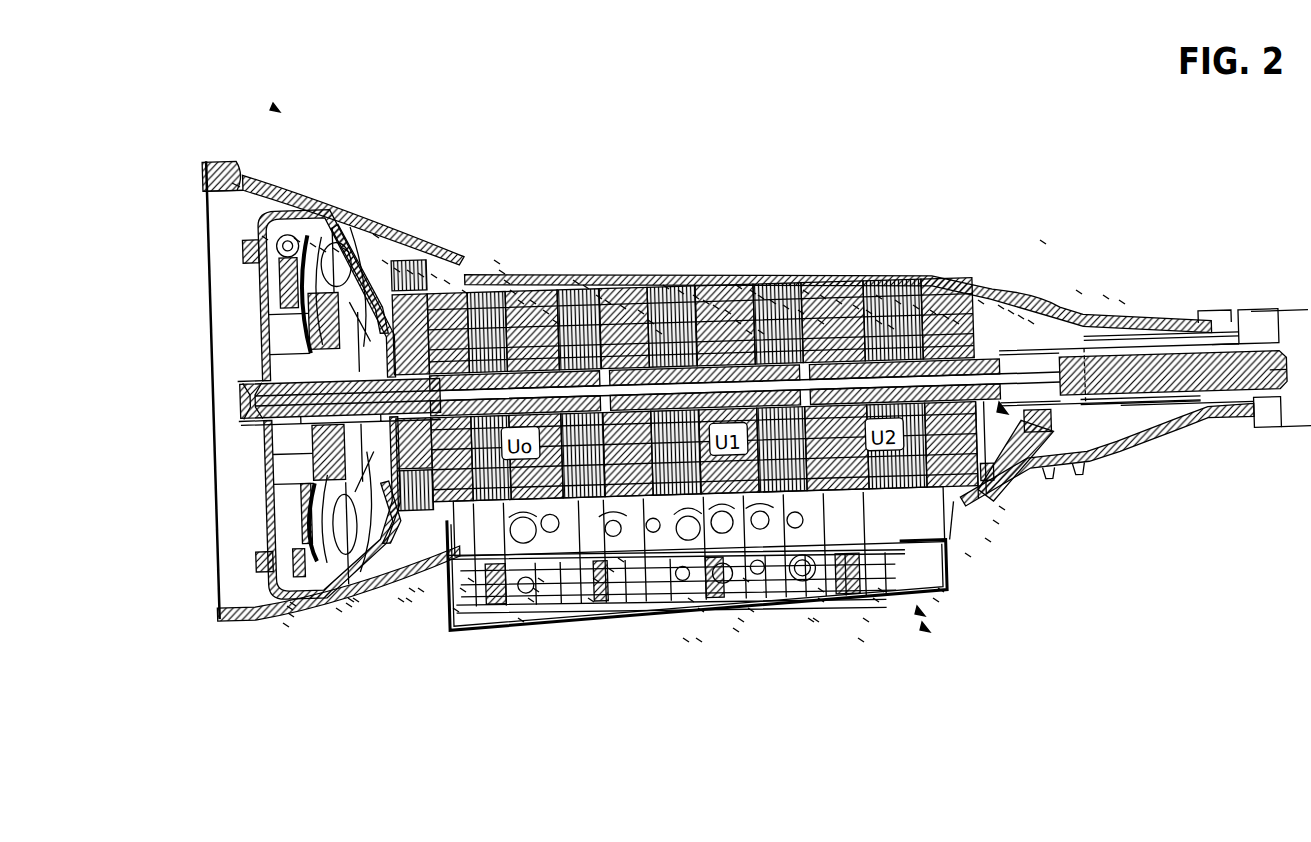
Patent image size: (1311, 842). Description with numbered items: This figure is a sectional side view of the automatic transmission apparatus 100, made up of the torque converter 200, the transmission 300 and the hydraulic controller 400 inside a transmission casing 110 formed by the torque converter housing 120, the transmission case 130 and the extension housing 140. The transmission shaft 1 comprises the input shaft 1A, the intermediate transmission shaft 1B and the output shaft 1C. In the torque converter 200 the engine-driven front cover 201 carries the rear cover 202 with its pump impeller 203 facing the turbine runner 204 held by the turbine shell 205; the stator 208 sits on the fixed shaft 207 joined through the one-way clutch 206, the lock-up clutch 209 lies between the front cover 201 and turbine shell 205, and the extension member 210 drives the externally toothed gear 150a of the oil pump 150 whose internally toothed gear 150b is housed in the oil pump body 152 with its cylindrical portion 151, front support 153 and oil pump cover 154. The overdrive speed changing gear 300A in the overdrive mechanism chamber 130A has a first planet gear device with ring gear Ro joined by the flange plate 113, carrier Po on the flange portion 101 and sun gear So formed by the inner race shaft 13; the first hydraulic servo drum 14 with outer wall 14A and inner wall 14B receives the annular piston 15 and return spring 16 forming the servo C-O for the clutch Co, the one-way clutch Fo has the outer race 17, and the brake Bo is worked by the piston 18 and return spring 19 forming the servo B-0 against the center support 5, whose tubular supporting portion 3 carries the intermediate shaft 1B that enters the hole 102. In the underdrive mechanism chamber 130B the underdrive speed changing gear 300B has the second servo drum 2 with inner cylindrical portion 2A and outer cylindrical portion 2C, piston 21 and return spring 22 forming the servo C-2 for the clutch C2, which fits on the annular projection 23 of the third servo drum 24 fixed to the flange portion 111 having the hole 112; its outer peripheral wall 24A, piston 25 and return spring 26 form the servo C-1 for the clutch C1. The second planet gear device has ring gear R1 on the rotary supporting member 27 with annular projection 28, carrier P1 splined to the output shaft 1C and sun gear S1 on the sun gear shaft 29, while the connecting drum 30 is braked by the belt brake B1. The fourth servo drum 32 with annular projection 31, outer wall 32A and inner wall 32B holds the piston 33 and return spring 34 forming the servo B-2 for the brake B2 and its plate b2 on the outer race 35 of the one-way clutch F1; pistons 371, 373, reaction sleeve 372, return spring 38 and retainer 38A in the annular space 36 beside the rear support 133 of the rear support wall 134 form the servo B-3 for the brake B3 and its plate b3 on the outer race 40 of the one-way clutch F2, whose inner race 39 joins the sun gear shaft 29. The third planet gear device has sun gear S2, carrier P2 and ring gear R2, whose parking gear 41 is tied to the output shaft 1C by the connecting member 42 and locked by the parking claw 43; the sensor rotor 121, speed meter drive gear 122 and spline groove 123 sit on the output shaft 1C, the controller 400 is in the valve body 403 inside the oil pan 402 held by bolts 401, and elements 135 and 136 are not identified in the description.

The transmission shaft 1 is at (1004, 412).
The input shaft 1A is at (410, 272).
The intermediate transmission shaft 1B is at (621, 560).
The output shaft 1C is at (1031, 322).
The second hydraulic servo drum 2 is at (608, 302).
The inner cylindrical portion 2A is at (641, 312).
The outer cylindrical portion 2C is at (623, 307).
The tubular supporting portion 3 is at (659, 332).
The center support 5 is at (586, 287).
The inner race shaft 13 is at (412, 590).
The first hydraulic servo drum 14 is at (434, 276).
The outer peripheral wall 14A is at (497, 262).
The inner peripheral wall 14B is at (502, 272).
The annular piston 15 is at (465, 292).
The return spring 16 is at (421, 590).
The outer race 17 is at (471, 580).
The piston 18 is at (556, 322).
The return spring 19 is at (536, 590).
The annular piston 21 is at (651, 322).
The return spring 22 is at (611, 570).
The annular projection 23 is at (706, 302).
The third hydraulic servo drum 24 is at (716, 307).
The outer peripheral wall 24A is at (749, 332).
The annular piston 25 is at (728, 312).
The return spring 26 is at (736, 630).
The rotary supporting member 27 is at (741, 620).
The annular projection 28 is at (691, 600).
The sun gear shaft 29 is at (811, 620).
The connecting drum 30 is at (739, 287).
The annular projection 31 is at (821, 600).
The fourth hydraulic servo drum 32 is at (866, 620).
The outer peripheral wall 32A is at (821, 590).
The inner peripheral wall 32B is at (816, 620).
The annular piston 33 is at (839, 302).
The return spring 34 is at (823, 297).
The outer race 35 is at (786, 307).
The annular space 36 is at (1001, 307).
The return spring 38 is at (988, 540).
The return spring retainer 38A is at (956, 322).
The inner race 39 is at (876, 600).
The outer race 40 is at (881, 590).
The parking gear 41 is at (921, 612).
The connecting member 42 is at (946, 317).
The parking claw 43 is at (936, 600).
The automatic transmission apparatus 100 is at (278, 108).
The flange portion 101 is at (531, 600).
The hole 102 is at (409, 600).
The transmission casing 110 is at (401, 600).
The flange portion 111 is at (699, 640).
The hole 112 is at (738, 322).
The flange plate 113 is at (541, 580).
The torque converter housing 120 is at (290, 608).
The sensor rotor 121 is at (1043, 242).
The speed meter drive gear 122 is at (1106, 297).
The spline groove 123 is at (1122, 302).
The transmission case 130 is at (666, 287).
The overdrive mechanism chamber 130A is at (521, 620).
The underdrive mechanism chamber 130B is at (746, 580).
The rear support 133 is at (996, 522).
The rear support wall 134 is at (1002, 508).
The valve body gasket 135 is at (591, 600).
The clutch cylinder 136 is at (856, 307).
The extension housing 140 is at (1079, 292).
The gear oil pump 150 is at (346, 250).
The externally toothed gear 150a is at (376, 236).
The internally toothed gear 150b is at (385, 262).
The cylindrical portion 151 is at (323, 250).
The oil pump body 152 is at (336, 250).
The front support 153 is at (421, 275).
The oil pump cover 154 is at (397, 270).
The torque converter 200 is at (286, 625).
The front cover 201 is at (291, 615).
The rear cover 202 is at (349, 605).
The pump impeller 203 is at (313, 245).
The turbine runner 204 is at (297, 240).
The turbine shell 205 is at (293, 604).
The one-way clutch 206 is at (265, 238).
The fixed shaft 207 is at (351, 600).
The stator 208 is at (339, 610).
The lock-up clutch 209 is at (237, 186).
The extension member 210 is at (356, 600).
The transmission 300 is at (926, 628).
The overdrive speed changing gear 300A is at (456, 610).
The underdrive speed changing gear 300B is at (596, 580).
The piston 371 is at (933, 312).
The reaction sleeve 372 is at (981, 302).
The piston 373 is at (1011, 312).
The hydraulic controller 400 is at (686, 640).
The bolts 401 is at (968, 555).
The oil pan 402 is at (941, 590).
The valve body 403 is at (751, 610).
The hydraulic servo B-0 is at (576, 282).
The hydraulic servo B-2 is at (861, 640).
The hydraulic servo B-3 is at (1021, 317).
The belt brake B1 is at (681, 292).
The multi-disc brake B2 is at (801, 312).
The multi-disc brake B3 is at (869, 312).
The brake plate b2 is at (821, 322).
The brake plate b3 is at (879, 322).
The multi-disc brake Bo is at (507, 282).
The hydraulic servo C-O is at (447, 282).
The hydraulic servo C-1 is at (701, 610).
The hydraulic servo C-2 is at (599, 297).
The multi-disc clutch C1 is at (761, 332).
The multi-disc clutch C2 is at (696, 297).
The multi-disc clutch Co is at (513, 292).
The one-way clutch F1 is at (806, 292).
The one-way clutch F2 is at (891, 327).
The one-way clutch Fo is at (463, 590).
The carrier P1 is at (761, 297).
The carrier P2 is at (898, 302).
The planetary carrier Po is at (533, 302).
The ring gear R1 is at (753, 292).
The ring gear R2 is at (916, 307).
The ring gear Ro is at (546, 312).
The sun gear S1 is at (773, 302).
The sun gear S2 is at (879, 297).
The sun gear So is at (521, 302).